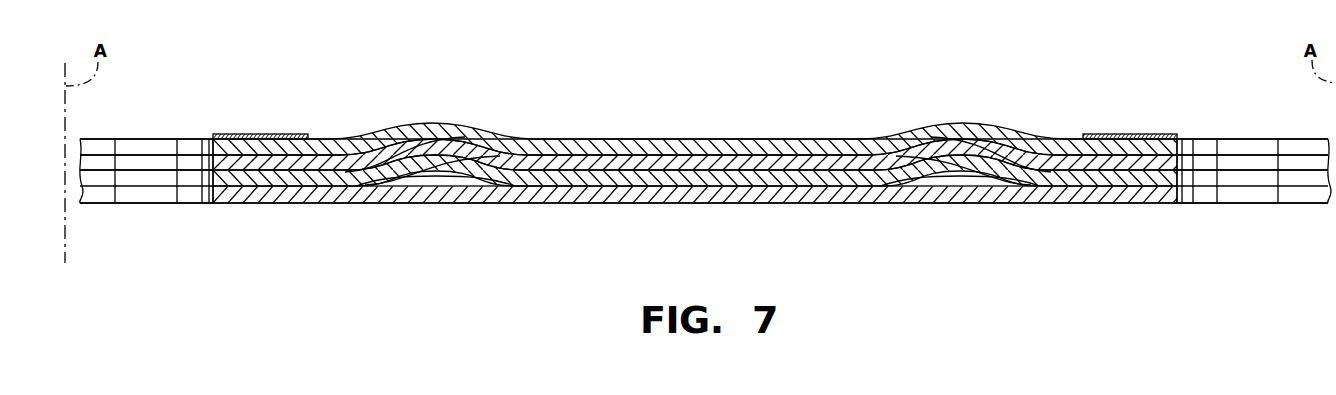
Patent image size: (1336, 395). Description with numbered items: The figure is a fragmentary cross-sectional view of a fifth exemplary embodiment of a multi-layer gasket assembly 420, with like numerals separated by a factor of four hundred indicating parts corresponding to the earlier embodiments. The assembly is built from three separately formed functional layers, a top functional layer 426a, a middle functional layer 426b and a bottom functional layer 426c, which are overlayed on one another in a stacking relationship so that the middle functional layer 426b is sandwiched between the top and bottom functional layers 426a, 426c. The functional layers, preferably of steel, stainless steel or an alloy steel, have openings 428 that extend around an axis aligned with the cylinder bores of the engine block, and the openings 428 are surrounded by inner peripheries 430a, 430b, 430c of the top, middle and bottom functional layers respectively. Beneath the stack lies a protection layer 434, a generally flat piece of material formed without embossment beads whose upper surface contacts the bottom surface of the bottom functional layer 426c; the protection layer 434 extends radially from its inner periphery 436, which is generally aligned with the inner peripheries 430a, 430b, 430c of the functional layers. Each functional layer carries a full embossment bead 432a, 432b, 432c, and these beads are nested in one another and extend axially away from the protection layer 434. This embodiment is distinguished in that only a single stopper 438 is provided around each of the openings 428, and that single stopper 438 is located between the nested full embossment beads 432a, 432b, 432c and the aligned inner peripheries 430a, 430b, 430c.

The multi-layer gasket assembly 420 is at (888, 84).
The top functional layer 426a is at (670, 146).
The middle functional layer 426b is at (683, 160).
The bottom functional layer 426c is at (647, 177).
The opening 428 is at (142, 177).
The inner periphery of top functional layer 430a is at (213, 150).
The inner periphery of middle functional layer 430b is at (213, 160).
The inner periphery of bottom functional layer 430c is at (213, 178).
The full embossment bead of top functional layer 432a is at (420, 147).
The full embossment bead of middle functional layer 432b is at (413, 145).
The full embossment bead of bottom functional layer 432c is at (428, 157).
The protection layer 434 is at (533, 195).
The inner periphery of protection layer 436 is at (210, 198).
The stopper 438 is at (257, 137).